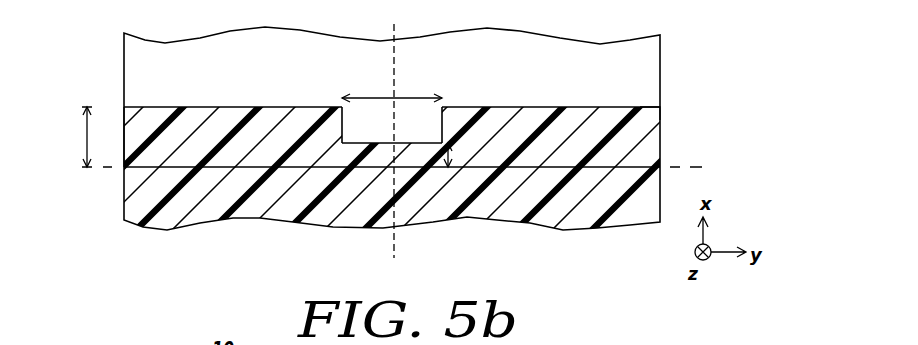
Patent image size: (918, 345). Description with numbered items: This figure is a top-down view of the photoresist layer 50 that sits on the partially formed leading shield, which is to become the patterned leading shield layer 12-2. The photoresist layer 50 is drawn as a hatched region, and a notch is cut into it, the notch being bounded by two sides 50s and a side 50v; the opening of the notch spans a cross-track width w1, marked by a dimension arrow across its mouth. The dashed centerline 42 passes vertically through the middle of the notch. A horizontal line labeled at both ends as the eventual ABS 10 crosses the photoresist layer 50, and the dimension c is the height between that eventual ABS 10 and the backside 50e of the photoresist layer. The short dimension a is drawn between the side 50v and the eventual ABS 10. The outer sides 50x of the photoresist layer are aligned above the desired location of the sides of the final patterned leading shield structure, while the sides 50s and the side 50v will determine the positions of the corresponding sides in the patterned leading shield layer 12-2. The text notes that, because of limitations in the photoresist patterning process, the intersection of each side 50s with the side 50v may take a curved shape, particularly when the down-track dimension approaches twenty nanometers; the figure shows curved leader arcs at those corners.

The patterned leading shield layer 12-2 is at (138, 51).
The photoresist layer 50 is at (643, 136).
The backside of the photoresist layer 50e is at (638, 107).
The sides of the photoresist layer 50x is at (125, 128).
The sides of the notch 50s is at (341, 131).
The side of the notch 50v is at (375, 144).
The eventual ABS 10 is at (388, 170).
The centerline 42 is at (393, 142).
The cross-track width w1 is at (392, 90).
The height c is at (81, 137).
The recess depth a is at (457, 155).